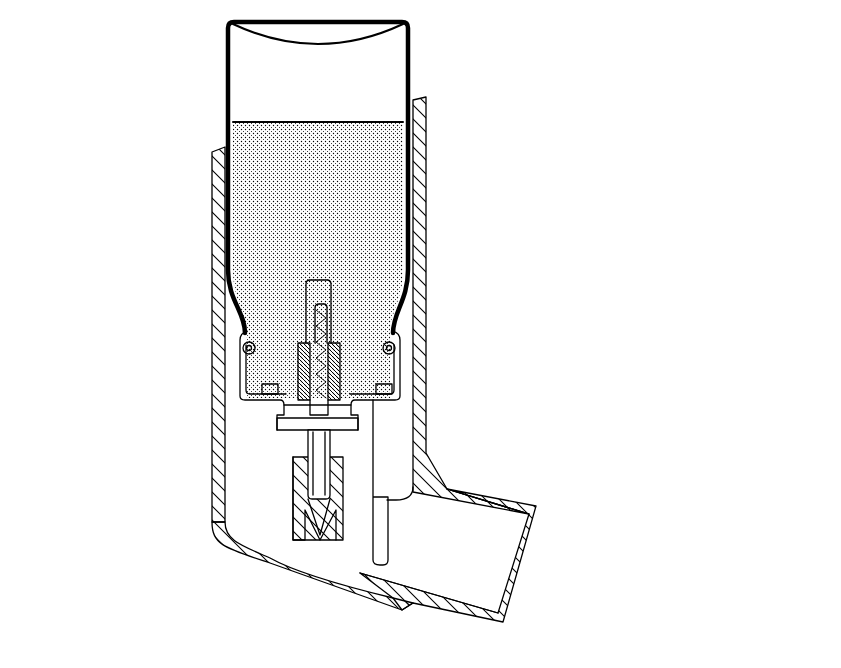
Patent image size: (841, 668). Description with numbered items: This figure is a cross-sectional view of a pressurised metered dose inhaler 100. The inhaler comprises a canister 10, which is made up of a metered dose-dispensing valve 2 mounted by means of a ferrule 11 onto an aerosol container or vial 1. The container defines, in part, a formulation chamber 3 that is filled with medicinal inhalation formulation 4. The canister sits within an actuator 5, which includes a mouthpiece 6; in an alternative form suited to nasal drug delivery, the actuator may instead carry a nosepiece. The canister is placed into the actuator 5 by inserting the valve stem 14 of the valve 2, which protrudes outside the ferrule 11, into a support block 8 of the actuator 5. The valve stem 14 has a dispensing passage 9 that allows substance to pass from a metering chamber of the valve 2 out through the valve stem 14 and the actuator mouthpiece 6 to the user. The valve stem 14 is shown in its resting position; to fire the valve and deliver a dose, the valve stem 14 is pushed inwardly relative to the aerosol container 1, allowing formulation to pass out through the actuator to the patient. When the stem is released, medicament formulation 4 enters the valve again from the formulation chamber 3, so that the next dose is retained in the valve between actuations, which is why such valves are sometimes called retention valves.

The pressurised metered dose inhaler 100 is at (178, 270).
The aerosol container 1 is at (232, 219).
The metered dose-dispensing valve 2 is at (333, 322).
The formulation chamber 3 is at (385, 111).
The medicinal inhalation formulation 4 is at (397, 157).
The actuator 5 is at (422, 285).
The mouthpiece 6 is at (468, 487).
The support block 8 is at (310, 494).
The dispensing passage 9 is at (320, 473).
The canister 10 is at (236, 363).
The ferrule 11 is at (245, 384).
The valve stem 14 is at (320, 447).